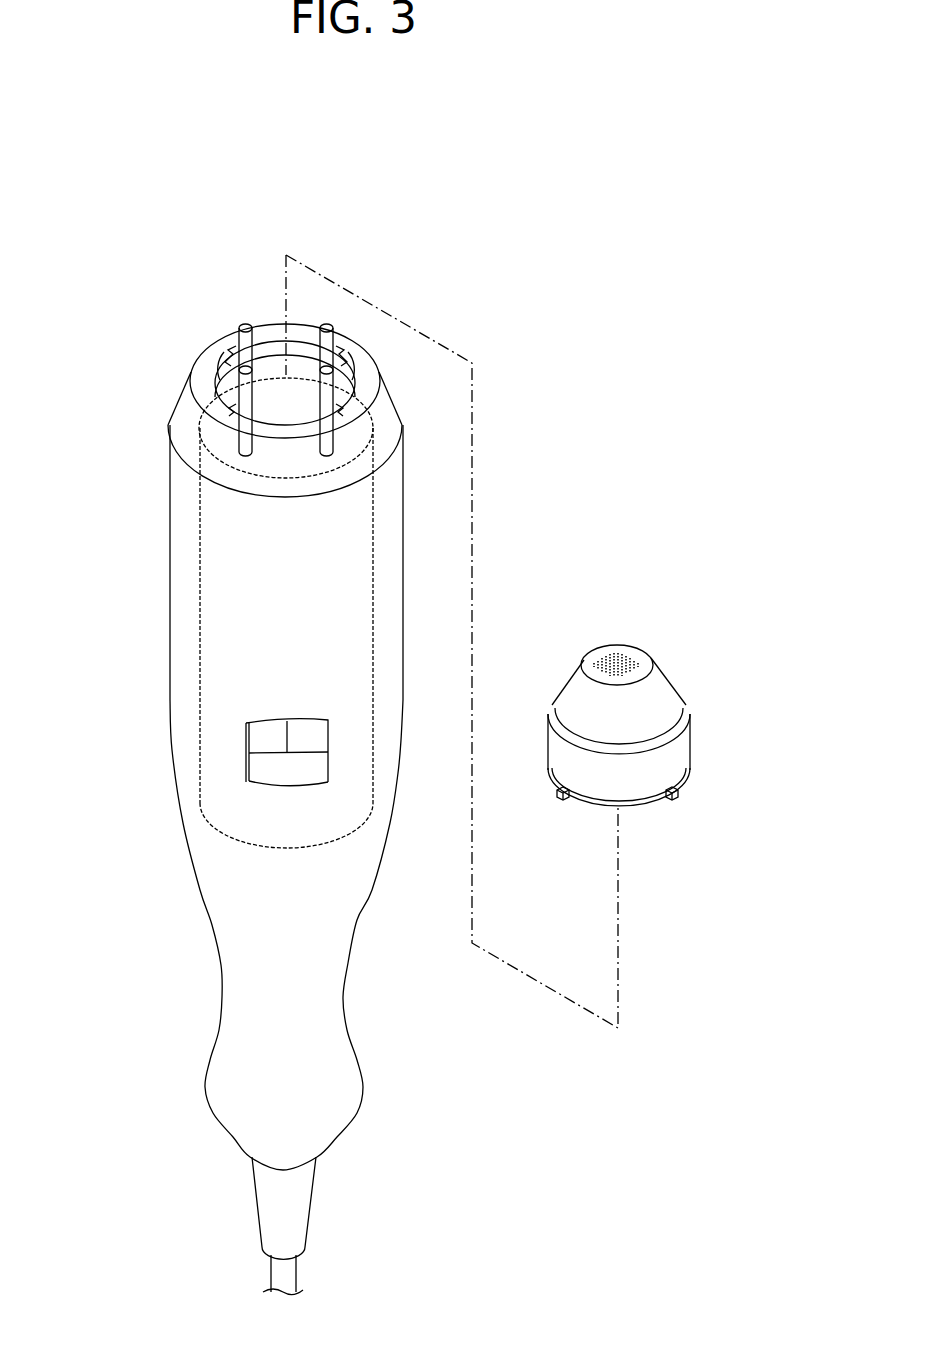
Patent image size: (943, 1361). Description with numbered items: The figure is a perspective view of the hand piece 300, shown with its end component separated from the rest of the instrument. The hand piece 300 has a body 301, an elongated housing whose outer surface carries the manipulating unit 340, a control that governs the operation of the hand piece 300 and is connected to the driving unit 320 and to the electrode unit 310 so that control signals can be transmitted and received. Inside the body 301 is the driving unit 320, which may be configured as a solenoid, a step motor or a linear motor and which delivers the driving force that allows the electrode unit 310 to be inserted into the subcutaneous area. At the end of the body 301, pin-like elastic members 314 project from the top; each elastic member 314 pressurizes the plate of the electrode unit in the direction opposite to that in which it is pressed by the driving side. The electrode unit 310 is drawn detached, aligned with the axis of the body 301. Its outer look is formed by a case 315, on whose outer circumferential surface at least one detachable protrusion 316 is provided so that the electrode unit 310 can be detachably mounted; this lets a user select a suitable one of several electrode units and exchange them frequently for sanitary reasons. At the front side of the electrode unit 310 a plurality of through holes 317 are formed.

The hand piece 300 is at (627, 392).
The body 301 is at (158, 695).
The electrode unit 310 is at (668, 702).
The elastic member 314 is at (243, 327).
The case 315 is at (682, 750).
The detachable protrusion 316 is at (678, 793).
The through holes 317 is at (627, 650).
The driving unit 320 is at (228, 571).
The manipulating unit 340 is at (257, 765).